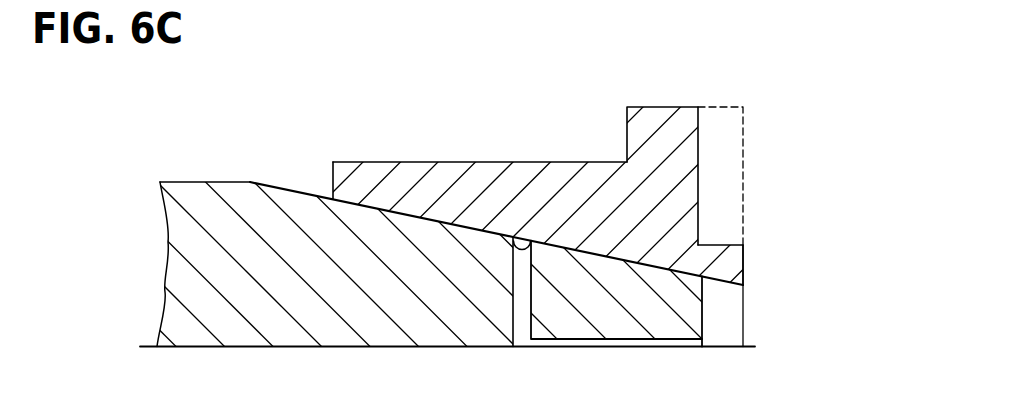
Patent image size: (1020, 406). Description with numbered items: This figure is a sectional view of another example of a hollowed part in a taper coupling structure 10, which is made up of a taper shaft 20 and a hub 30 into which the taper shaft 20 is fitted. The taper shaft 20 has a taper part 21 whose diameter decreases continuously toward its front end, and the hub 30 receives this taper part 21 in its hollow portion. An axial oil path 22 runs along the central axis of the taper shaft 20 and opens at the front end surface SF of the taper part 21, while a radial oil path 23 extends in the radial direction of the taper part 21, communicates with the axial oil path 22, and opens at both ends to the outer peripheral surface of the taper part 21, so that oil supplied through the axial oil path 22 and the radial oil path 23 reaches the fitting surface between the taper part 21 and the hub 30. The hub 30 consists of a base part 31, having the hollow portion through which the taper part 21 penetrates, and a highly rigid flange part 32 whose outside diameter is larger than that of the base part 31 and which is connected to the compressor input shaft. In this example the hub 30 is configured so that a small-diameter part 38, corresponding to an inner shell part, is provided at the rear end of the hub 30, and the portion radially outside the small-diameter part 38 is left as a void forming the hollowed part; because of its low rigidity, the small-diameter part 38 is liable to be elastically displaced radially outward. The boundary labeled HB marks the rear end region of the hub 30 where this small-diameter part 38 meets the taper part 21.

The taper coupling structure 10 is at (330, 114).
The taper shaft 20 is at (228, 172).
The taper part 21 is at (305, 193).
The axial oil path 22 is at (680, 347).
The radial oil path 23 is at (522, 283).
The hub 30 is at (374, 152).
The base part 31 is at (417, 162).
The flange part 32 is at (660, 107).
The small-diameter part 38 is at (743, 258).
The hole bottom boundary HB is at (743, 280).
The front end surface SF is at (702, 328).